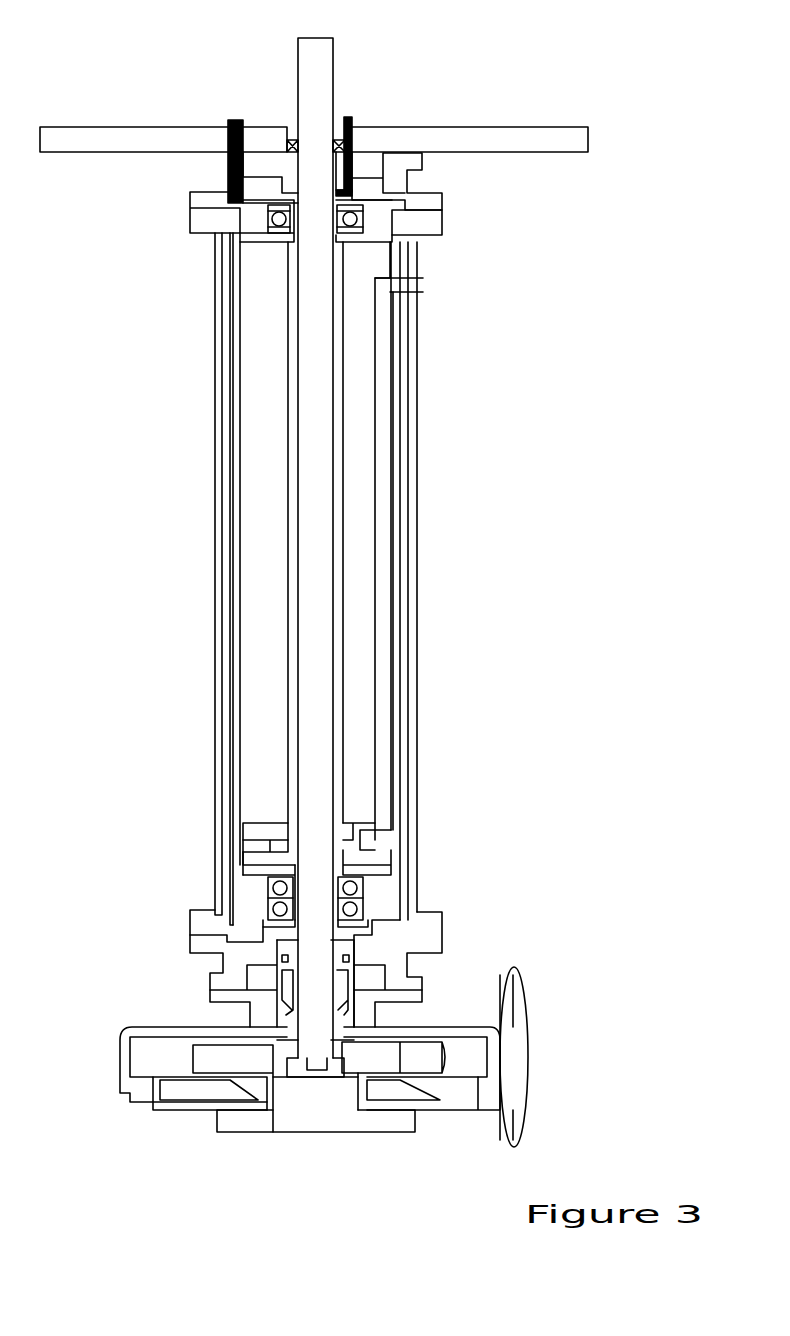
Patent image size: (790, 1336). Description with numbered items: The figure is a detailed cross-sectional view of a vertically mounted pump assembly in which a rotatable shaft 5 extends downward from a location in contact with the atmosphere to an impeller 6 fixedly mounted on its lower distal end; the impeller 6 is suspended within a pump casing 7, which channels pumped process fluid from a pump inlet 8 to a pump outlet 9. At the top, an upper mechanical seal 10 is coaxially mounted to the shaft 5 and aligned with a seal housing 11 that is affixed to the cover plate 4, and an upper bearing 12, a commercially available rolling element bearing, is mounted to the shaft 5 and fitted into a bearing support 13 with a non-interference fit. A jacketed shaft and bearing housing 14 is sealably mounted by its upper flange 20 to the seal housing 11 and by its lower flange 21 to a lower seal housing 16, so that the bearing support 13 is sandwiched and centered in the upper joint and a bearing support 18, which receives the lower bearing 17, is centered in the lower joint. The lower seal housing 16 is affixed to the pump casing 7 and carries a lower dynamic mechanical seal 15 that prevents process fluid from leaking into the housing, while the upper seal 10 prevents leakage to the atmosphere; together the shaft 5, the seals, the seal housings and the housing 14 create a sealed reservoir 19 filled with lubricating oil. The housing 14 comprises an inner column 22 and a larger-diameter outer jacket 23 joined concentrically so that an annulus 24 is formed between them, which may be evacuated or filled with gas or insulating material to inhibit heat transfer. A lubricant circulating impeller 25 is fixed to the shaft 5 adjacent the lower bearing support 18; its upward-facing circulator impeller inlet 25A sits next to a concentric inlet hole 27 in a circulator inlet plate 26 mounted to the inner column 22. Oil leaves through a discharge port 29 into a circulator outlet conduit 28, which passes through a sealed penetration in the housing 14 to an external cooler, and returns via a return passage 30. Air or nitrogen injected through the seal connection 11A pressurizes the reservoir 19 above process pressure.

The cover plate 4 is at (500, 127).
The rotatable shaft 5 is at (333, 58).
The impeller 6 is at (230, 1065).
The pump casing 7 is at (125, 1030).
The pump inlet 8 is at (345, 1140).
The pump outlet 9 is at (540, 1053).
The upper mechanical seal 10 is at (289, 140).
The seal housing 11 is at (410, 182).
The seal connection 11A is at (232, 120).
The upper bearing 12 is at (270, 228).
The bearing support 13 is at (398, 238).
The jacketed shaft and bearing housing 14 is at (215, 395).
The lower dynamic mechanical seal 15 is at (290, 998).
The lower seal housing 16 is at (190, 948).
The lower bearing 17 is at (268, 905).
The bearing support 18 is at (387, 885).
The sealed reservoir 19 is at (368, 752).
The upper flange 20 is at (442, 225).
The lower flange 21 is at (440, 915).
The inner column 22 is at (233, 443).
The outer jacket 23 is at (218, 488).
The annulus 24 is at (230, 538).
The lubricant circulating impeller 25 is at (243, 862).
The circulator impeller inlet 25A is at (283, 833).
The circulator inlet plate 26 is at (243, 832).
The concentric inlet hole 27 is at (287, 827).
The circulator outlet conduit 28 is at (388, 652).
The discharge port 29 is at (385, 815).
The return passage 30 is at (350, 117).